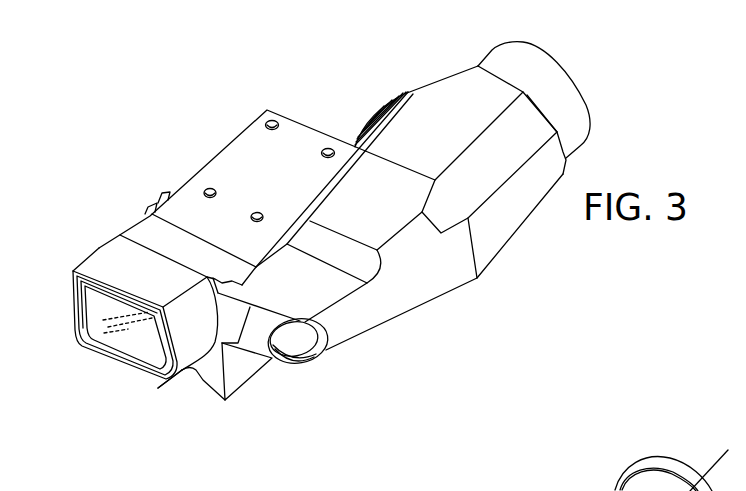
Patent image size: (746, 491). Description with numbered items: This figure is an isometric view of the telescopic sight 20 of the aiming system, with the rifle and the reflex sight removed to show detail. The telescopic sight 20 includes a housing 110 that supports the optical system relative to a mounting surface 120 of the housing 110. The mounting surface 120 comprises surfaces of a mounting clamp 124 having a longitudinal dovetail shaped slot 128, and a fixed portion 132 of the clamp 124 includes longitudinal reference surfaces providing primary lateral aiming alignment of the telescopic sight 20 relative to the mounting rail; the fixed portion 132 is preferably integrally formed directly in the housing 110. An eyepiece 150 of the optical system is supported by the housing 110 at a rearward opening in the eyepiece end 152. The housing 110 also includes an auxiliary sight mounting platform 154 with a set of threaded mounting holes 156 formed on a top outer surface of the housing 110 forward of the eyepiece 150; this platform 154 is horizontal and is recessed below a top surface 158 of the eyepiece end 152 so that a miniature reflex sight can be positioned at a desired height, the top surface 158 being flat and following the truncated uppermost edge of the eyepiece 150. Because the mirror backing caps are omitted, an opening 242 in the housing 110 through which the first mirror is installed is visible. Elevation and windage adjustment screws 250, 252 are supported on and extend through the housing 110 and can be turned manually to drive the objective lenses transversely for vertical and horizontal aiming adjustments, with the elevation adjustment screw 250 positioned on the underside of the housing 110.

The telescopic sight 20 is at (147, 119).
The housing 110 is at (420, 292).
The mounting surface 120 is at (200, 381).
The mounting clamp 124 is at (178, 382).
The longitudinal dovetail shaped slot 128 is at (175, 386).
The fixed portion of clamp 132 is at (200, 381).
The eyepiece 150 is at (118, 346).
The eyepiece end 152 is at (73, 296).
The auxiliary sight mounting platform 154 is at (239, 160).
The threaded mounting holes 156 is at (322, 157).
The top surface of eyepiece end 158 is at (118, 268).
The opening 242 is at (296, 344).
The elevation adjustment screw 250 is at (506, 253).
The windage adjustment screw 252 is at (372, 107).